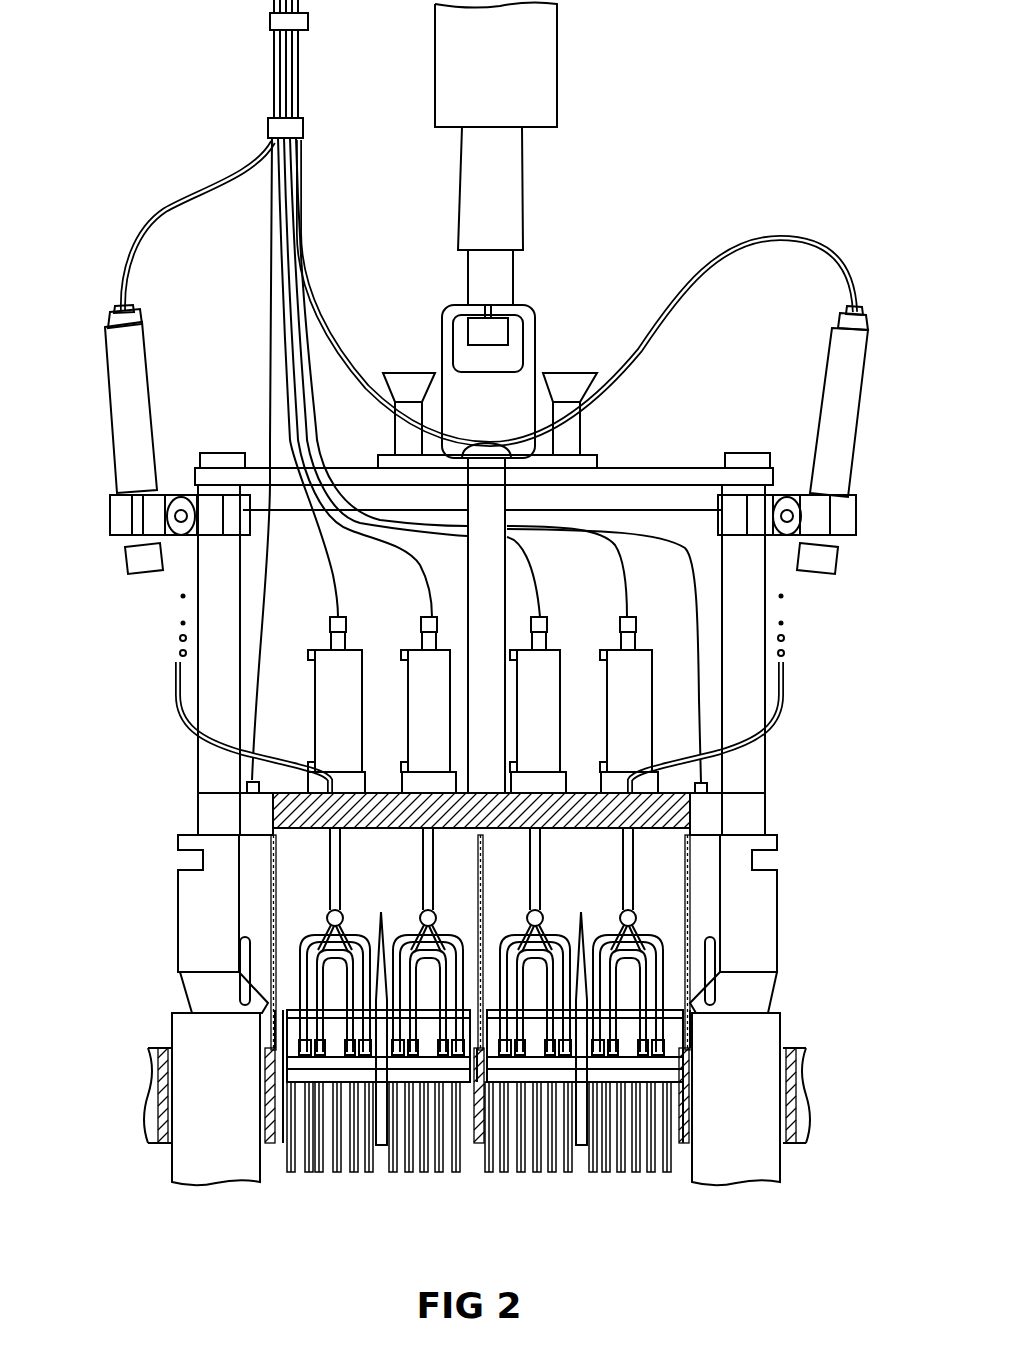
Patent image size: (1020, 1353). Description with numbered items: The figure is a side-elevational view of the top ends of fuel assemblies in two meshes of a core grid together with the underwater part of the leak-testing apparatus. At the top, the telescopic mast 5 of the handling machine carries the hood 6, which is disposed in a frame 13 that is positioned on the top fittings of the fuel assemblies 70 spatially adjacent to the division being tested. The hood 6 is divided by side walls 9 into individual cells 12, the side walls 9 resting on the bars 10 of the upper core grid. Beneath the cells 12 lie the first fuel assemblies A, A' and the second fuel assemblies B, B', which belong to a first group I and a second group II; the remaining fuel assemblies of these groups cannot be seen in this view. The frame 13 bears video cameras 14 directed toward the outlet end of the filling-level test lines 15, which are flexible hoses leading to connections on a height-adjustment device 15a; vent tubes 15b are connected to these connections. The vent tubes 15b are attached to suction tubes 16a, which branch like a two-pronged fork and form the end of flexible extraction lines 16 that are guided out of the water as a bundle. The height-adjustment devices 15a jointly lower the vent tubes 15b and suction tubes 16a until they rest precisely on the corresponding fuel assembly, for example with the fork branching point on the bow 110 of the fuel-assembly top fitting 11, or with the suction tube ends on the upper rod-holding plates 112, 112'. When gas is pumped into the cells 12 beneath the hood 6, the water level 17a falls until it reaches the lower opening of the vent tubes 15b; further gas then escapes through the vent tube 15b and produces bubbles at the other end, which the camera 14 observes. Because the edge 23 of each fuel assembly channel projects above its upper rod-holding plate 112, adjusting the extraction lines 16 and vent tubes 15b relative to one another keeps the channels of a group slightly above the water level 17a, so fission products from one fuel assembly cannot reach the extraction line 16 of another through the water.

The mast 5 is at (535, 60).
The hood 6 is at (665, 818).
The side walls 9 is at (270, 893).
The bars 10 is at (163, 1145).
The fuel-assembly top fitting 11 is at (300, 1023).
The cells 12 is at (398, 867).
The frame 13 is at (753, 610).
The video cameras 14 is at (838, 370).
The filling-level test lines 15 is at (783, 692).
The height-adjustment device 15a is at (635, 712).
The vent tubes 15b is at (330, 977).
The extraction lines 16 is at (305, 412).
The suction tubes 16a is at (335, 850).
The water level 17a is at (685, 1038).
The edge of the fuel assembly channel 23 is at (688, 995).
The fuel assemblies 70 is at (218, 1150).
The bow 110 is at (655, 945).
The upper rod-holding plate 112 is at (385, 1012).
The upper rod-holding plate 112' is at (588, 1012).
The first fuel assembly A is at (330, 1166).
The second fuel assembly B is at (424, 1163).
The first fuel assembly A' is at (528, 1166).
The second fuel assembly B' is at (630, 1163).
The first group I is at (350, 1172).
The second group II is at (616, 1172).